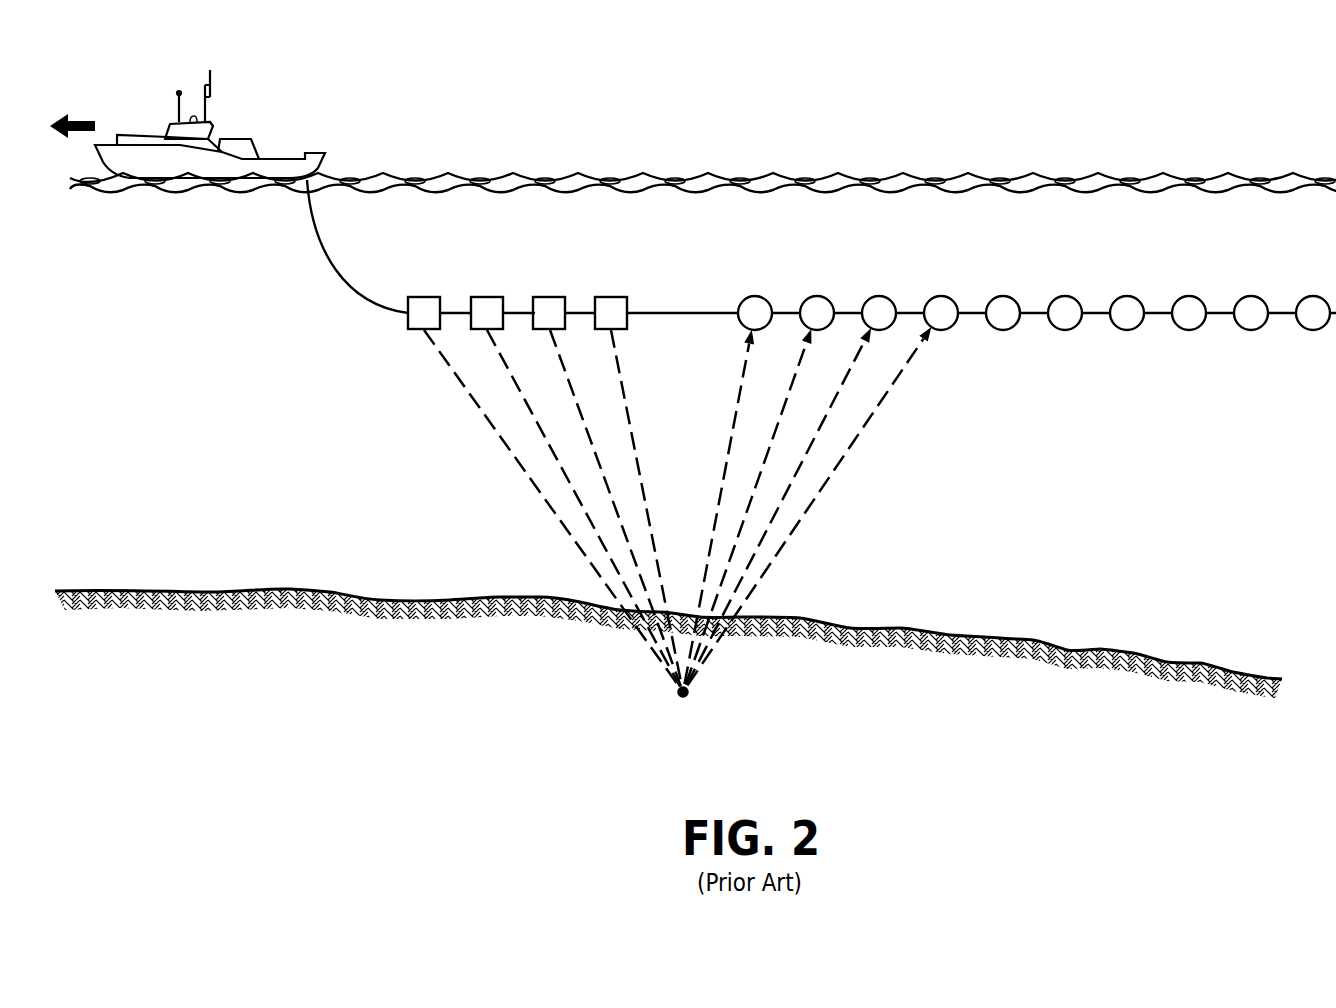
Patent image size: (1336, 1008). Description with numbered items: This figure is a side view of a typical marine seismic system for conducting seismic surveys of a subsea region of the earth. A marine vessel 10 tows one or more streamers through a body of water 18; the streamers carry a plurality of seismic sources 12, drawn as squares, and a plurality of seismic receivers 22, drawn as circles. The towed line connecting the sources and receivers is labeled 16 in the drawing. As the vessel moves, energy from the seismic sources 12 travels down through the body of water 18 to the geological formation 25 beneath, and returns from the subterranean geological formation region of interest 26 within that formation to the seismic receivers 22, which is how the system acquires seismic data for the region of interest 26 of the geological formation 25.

The marine vessel 10 is at (295, 152).
The seismic sources 12 is at (619, 284).
The tow cable / streamer 16 is at (672, 313).
The body of water 18 is at (313, 446).
The seismic receivers 22 is at (1329, 284).
The geological formation 25 is at (473, 677).
The subterranean geological formation region of interest 26 is at (697, 695).